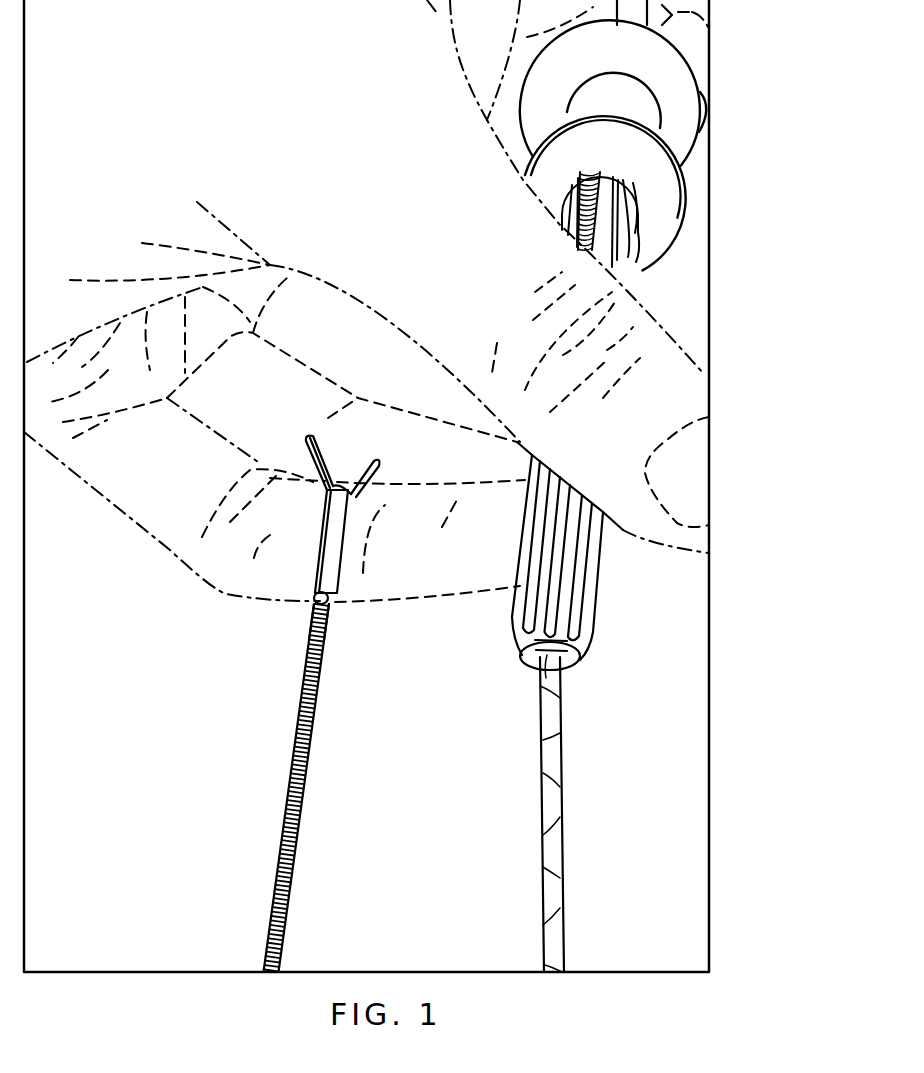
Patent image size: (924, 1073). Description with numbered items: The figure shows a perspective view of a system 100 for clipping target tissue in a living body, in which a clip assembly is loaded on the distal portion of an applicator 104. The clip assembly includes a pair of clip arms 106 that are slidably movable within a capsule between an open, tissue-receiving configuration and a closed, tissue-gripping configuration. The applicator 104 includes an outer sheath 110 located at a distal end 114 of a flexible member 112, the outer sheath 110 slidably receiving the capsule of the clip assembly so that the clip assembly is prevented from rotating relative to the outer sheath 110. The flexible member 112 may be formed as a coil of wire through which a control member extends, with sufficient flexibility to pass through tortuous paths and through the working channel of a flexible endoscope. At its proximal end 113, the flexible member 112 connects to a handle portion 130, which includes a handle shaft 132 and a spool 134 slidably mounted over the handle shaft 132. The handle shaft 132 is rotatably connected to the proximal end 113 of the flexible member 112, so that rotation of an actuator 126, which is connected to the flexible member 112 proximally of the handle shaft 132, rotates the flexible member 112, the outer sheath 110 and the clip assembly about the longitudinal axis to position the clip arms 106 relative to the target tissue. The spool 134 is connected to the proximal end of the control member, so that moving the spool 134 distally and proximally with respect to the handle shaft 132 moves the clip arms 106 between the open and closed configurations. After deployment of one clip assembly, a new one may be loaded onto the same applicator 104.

The system 100 is at (265, 704).
The applicator 104 is at (572, 722).
The clip arms 106 is at (307, 452).
The outer sheath 110 is at (314, 537).
The flexible member 112 is at (293, 902).
The proximal end 113 is at (546, 660).
The distal end 114 is at (327, 627).
The actuator 126 is at (577, 592).
The handle portion 130 is at (631, 254).
The handle shaft 132 is at (620, 216).
The spool 134 is at (647, 97).